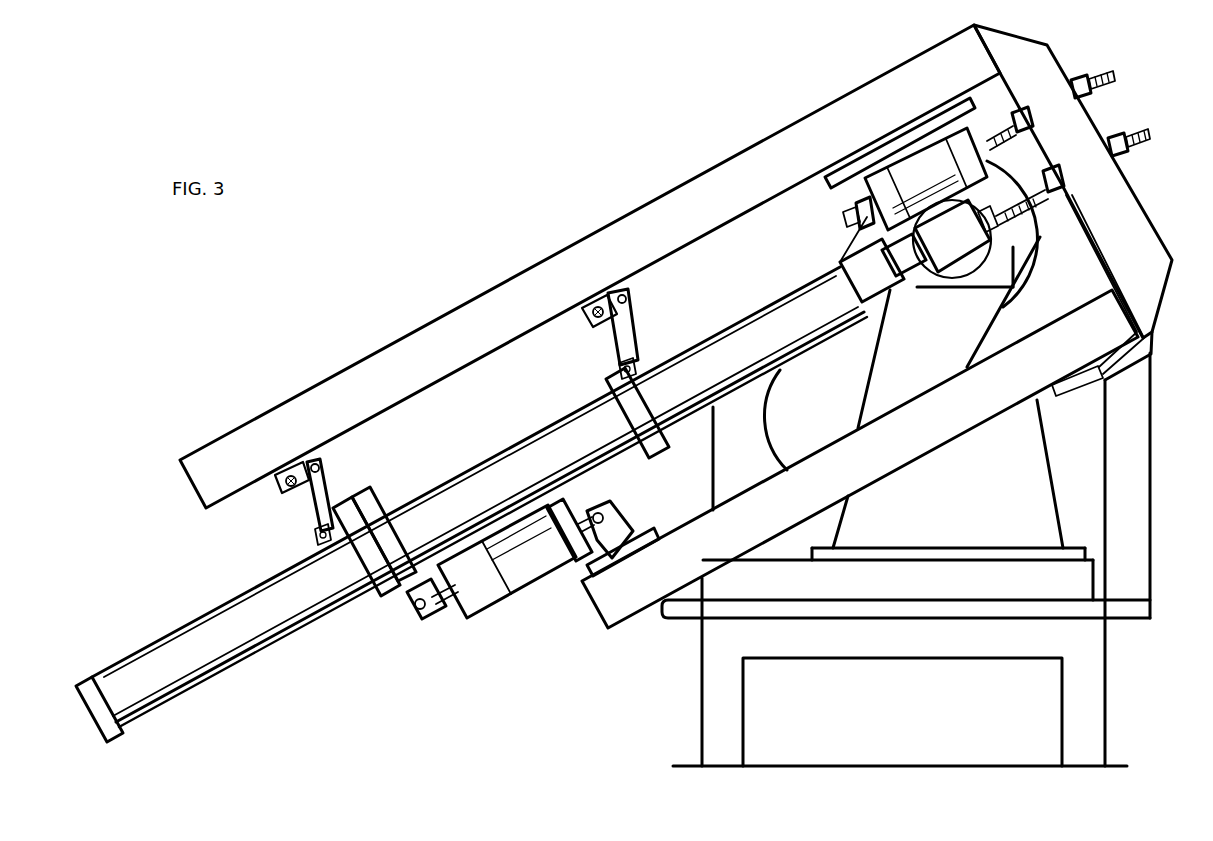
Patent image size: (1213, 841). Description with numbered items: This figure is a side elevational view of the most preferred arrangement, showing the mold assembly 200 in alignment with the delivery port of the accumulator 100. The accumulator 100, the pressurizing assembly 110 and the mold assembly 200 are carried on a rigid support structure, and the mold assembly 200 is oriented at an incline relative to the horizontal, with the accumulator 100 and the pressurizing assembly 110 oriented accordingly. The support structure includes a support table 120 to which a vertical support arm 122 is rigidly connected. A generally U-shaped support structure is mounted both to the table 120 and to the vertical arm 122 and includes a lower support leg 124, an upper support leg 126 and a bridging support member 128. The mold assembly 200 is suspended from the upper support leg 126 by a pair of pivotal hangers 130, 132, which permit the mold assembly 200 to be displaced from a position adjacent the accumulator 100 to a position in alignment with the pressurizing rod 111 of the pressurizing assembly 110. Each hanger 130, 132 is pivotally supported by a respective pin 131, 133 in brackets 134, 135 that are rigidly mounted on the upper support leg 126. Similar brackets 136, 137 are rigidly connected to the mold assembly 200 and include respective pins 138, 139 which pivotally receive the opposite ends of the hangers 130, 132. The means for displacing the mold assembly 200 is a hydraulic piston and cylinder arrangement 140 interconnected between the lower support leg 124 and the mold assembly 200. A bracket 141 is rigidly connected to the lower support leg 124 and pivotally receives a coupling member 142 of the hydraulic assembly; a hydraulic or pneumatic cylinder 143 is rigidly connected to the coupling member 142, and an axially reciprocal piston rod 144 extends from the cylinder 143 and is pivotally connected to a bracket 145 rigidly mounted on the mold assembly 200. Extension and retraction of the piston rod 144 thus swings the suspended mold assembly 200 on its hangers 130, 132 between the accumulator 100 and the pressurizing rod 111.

The accumulator 100 is at (968, 251).
The pressurizing assembly 110 is at (939, 184).
The pressurizing rod 111 is at (843, 220).
The support table 120 is at (1132, 645).
The vertical support arm 122 is at (1140, 506).
The lower support leg 124 is at (880, 463).
The upper support leg 126 is at (657, 207).
The bridging support member 128 is at (1133, 208).
The pivotal hanger 130 is at (326, 486).
The pin 131 is at (290, 489).
The pivotal hanger 132 is at (630, 312).
The pin 133 is at (590, 311).
The bracket 134 is at (277, 485).
The bracket 135 is at (598, 320).
The bracket 136 is at (316, 540).
The bracket 137 is at (614, 368).
The pin 138 is at (329, 516).
The pin 139 is at (635, 366).
The hydraulic piston and cylinder arrangement 140 is at (519, 590).
The bracket 141 is at (628, 531).
The coupling member 142 is at (583, 515).
The hydraulic cylinder 143 is at (533, 567).
The piston rod 144 is at (449, 602).
The bracket 145 is at (407, 596).
The mold assembly 200 is at (729, 308).